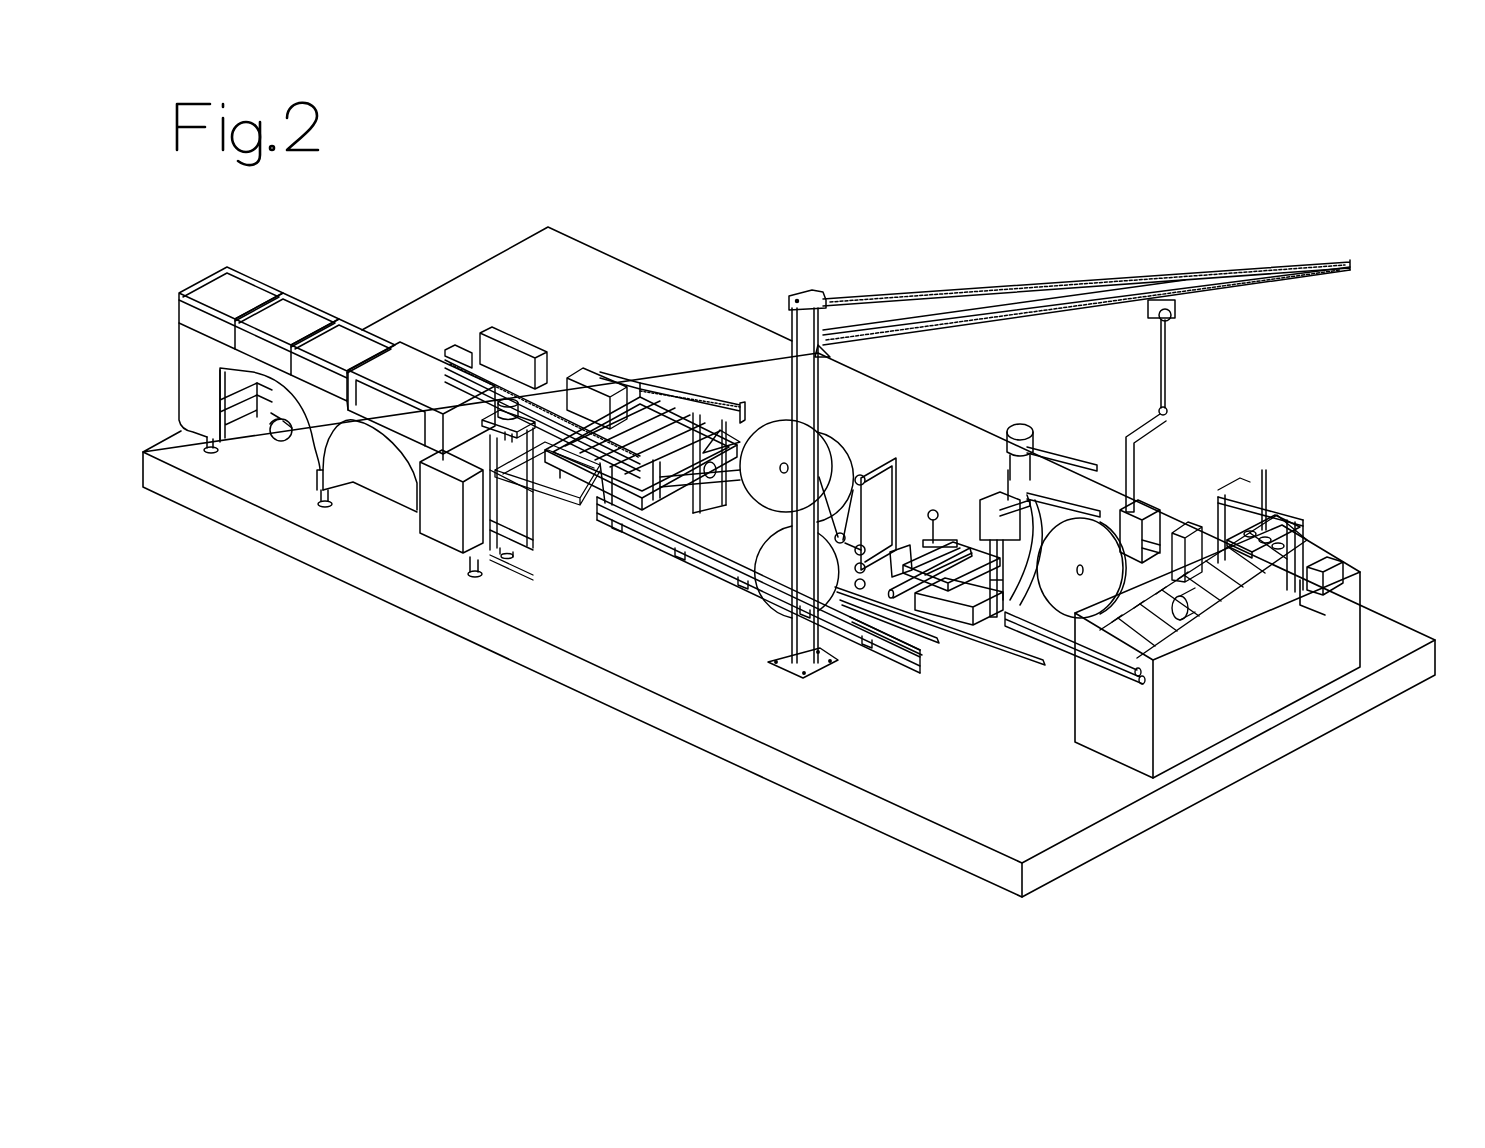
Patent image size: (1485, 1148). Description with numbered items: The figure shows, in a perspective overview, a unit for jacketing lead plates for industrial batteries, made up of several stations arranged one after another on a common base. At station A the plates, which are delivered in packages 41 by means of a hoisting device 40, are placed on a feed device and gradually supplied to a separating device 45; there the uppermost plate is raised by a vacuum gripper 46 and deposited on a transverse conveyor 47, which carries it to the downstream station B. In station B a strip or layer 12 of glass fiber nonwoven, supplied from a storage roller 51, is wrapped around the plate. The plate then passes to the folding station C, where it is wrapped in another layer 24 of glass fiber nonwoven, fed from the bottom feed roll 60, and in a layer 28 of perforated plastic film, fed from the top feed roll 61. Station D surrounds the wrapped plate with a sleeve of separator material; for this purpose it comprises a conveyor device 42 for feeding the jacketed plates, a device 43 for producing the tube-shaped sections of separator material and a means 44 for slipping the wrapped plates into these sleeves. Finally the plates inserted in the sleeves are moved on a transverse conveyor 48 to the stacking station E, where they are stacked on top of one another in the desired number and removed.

The layer of glass fiber nonwoven 12 is at (1028, 567).
The second layer of glass fiber nonwoven 24 is at (835, 473).
The layer of perforated plastic film 28 is at (850, 638).
The hoisting device 40 is at (1117, 437).
The package of lead plates 41 is at (1137, 517).
The conveyor device 42 is at (670, 533).
The device for producing tube-shaped sections of separator material 43 is at (417, 328).
The means for slipping wrapped lead plates into sleeves 44 is at (560, 516).
The separating device 45 is at (1290, 508).
The vacuum gripper 46 is at (1283, 558).
The transverse conveyor 47 is at (1150, 658).
The transverse conveyor 48 is at (630, 393).
The storage roller 51 is at (1087, 597).
The bottom feed roll 60 is at (762, 607).
The top feed roll 61 is at (778, 402).
The station A is at (1240, 478).
The station B is at (972, 643).
The station C is at (913, 507).
The station D is at (592, 547).
The station E is at (670, 350).